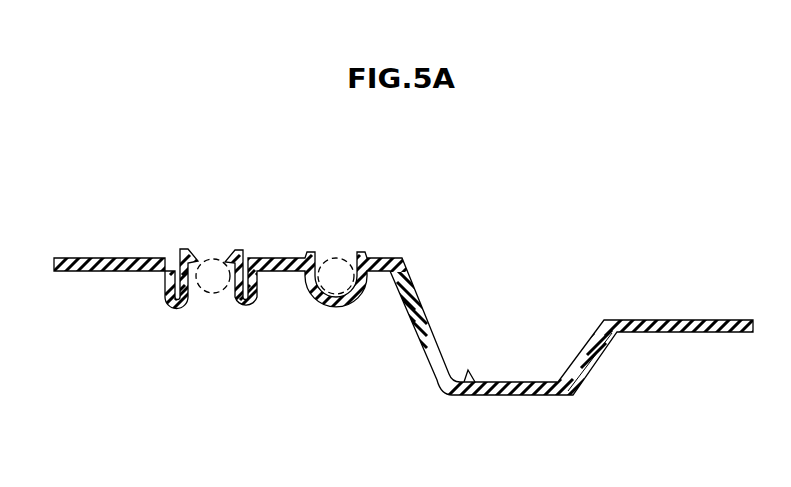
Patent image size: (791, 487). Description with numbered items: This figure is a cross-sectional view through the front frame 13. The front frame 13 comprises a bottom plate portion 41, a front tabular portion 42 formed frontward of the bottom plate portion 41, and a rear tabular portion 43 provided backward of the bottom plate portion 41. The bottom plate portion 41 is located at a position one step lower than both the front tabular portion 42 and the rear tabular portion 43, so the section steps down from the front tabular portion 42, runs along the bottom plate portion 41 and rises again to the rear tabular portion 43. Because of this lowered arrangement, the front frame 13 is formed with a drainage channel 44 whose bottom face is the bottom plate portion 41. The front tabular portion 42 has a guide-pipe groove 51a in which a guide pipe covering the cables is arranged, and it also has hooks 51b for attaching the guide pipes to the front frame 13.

The front frame 13 is at (472, 228).
The bottom plate portion 41 is at (519, 396).
The front tabular portion 42 is at (129, 257).
The rear tabular portion 43 is at (697, 320).
The drainage channel 44 is at (467, 383).
The guide-pipe groove 51a is at (343, 254).
The hook 51b is at (232, 250).